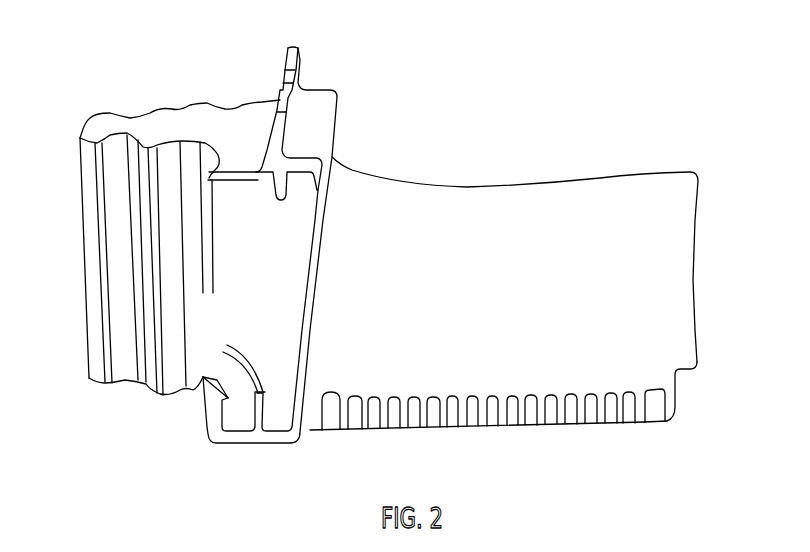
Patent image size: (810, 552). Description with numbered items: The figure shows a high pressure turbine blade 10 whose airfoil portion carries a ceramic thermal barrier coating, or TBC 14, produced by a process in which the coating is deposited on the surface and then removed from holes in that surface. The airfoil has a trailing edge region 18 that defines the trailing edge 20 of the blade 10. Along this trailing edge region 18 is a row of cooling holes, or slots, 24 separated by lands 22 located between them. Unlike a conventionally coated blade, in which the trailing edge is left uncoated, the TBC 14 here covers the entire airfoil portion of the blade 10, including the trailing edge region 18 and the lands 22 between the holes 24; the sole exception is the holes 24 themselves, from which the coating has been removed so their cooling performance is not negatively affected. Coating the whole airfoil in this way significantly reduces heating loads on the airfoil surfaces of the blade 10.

The HPT blade 10 is at (50, 130).
The ceramic coating (TBC) 14 is at (580, 250).
The trailing edge region 18 is at (740, 375).
The trailing edge 20 is at (511, 429).
The lands 22 is at (613, 407).
The cooling holes (slots) 24 is at (658, 411).